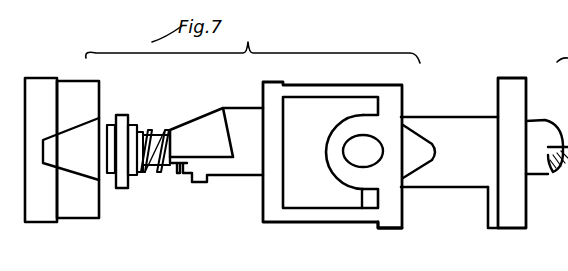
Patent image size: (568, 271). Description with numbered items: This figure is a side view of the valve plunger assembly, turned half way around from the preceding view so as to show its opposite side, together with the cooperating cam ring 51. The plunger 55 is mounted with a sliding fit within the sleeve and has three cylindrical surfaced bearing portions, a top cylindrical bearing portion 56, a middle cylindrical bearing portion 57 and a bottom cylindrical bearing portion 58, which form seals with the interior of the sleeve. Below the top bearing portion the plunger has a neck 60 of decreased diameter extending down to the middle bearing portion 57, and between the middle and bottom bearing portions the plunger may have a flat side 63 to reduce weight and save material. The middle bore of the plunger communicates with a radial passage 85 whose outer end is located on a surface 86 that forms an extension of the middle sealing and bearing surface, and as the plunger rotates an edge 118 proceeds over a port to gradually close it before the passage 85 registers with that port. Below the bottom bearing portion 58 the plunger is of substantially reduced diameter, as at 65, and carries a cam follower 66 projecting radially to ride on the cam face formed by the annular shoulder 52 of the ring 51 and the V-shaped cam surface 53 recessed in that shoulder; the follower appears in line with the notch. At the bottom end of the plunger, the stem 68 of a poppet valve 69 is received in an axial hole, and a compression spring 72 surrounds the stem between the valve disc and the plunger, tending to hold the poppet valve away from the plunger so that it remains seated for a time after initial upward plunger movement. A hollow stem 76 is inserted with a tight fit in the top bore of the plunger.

The cam ring 51 is at (37, 80).
The annular shoulder 52 is at (99, 206).
The V-shaped cam surface 53 is at (89, 167).
The poppet valve 69 is at (123, 118).
The compression spring 72 is at (145, 133).
The stem 68 is at (147, 170).
The cam follower 66 is at (205, 147).
The reduced diameter portion 65 is at (242, 175).
The bottom cylindrical bearing portion 58 is at (273, 81).
The surface 86 is at (337, 150).
The radial passage 85 is at (379, 156).
The flat side 63 is at (332, 198).
The edge 118 is at (360, 193).
The middle cylindrical bearing portion 57 is at (385, 226).
The neck 60 is at (451, 123).
The plunger 55 is at (446, 183).
The top cylindrical bearing portion 56 is at (513, 228).
The hollow stem 76 is at (546, 128).